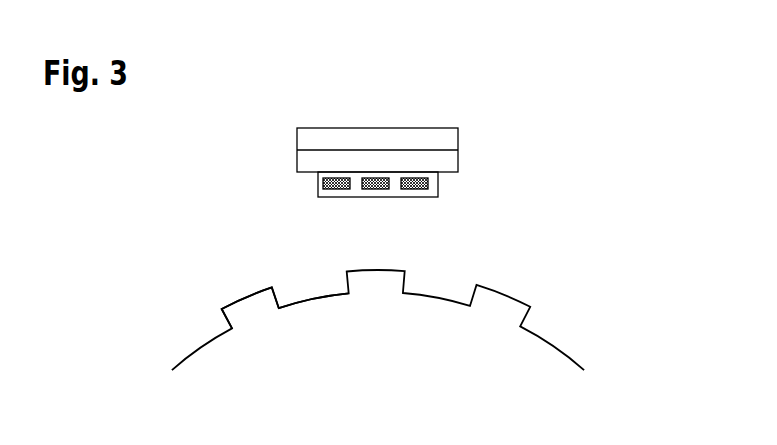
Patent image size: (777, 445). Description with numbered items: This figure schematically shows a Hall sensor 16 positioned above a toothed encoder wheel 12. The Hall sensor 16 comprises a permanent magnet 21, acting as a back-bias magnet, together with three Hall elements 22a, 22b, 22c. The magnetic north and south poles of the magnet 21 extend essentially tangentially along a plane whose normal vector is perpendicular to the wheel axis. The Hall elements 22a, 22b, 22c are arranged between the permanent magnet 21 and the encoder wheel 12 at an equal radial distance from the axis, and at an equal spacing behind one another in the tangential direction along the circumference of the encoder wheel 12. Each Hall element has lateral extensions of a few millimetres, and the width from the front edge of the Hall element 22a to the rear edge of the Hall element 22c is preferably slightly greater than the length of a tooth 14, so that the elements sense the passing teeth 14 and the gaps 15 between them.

The encoder wheel 12 is at (170, 288).
The tooth 14 is at (253, 313).
The tooth gap 15 is at (310, 290).
The Hall sensor 16 is at (272, 127).
The permanent magnet 21 is at (382, 182).
The Hall element 22a is at (335, 193).
The Hall element 22b is at (378, 193).
The Hall element 22c is at (418, 195).